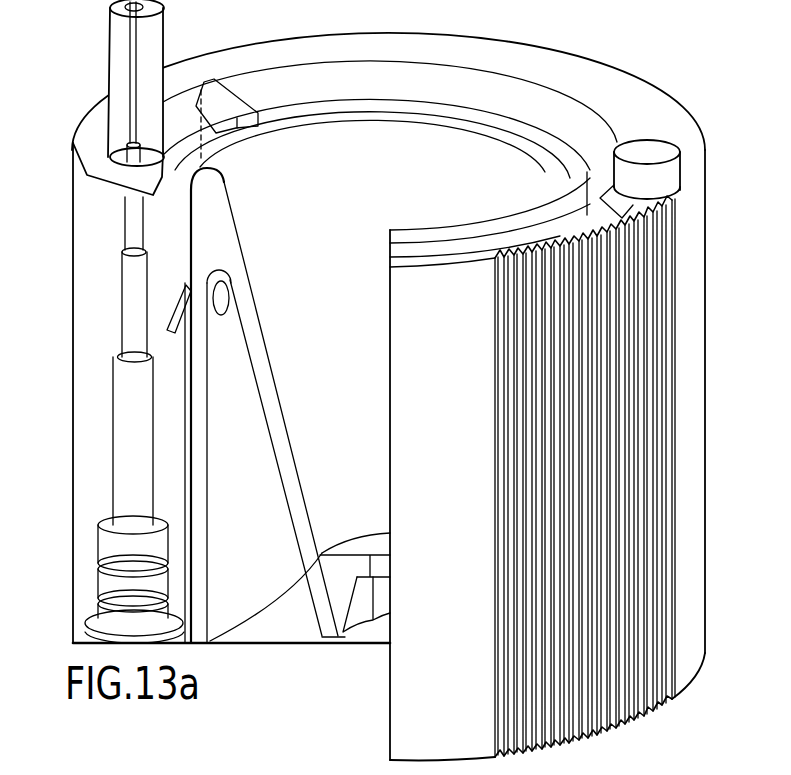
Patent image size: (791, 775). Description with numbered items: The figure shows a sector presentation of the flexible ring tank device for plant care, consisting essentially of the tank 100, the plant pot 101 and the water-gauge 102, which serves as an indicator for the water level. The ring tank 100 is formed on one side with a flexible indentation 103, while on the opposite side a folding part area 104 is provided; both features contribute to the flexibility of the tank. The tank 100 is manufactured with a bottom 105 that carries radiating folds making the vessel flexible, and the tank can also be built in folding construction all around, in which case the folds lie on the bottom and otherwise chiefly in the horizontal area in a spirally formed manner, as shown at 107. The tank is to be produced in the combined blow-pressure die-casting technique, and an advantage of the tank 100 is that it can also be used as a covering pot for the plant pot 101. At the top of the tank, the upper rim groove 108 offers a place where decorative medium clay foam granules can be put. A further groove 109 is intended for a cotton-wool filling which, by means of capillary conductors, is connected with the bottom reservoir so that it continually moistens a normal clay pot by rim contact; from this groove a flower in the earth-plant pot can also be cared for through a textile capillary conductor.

The tank 100 is at (73, 480).
The plant pot 101 is at (290, 433).
The water-gauge 102 is at (163, 23).
The flexible indentation 103 is at (218, 86).
The folding part area 104 is at (647, 703).
The bottom 105 is at (237, 637).
The spirally formed folds 107 is at (663, 457).
The upper rim groove 108 is at (104, 160).
The groove 109 is at (178, 289).